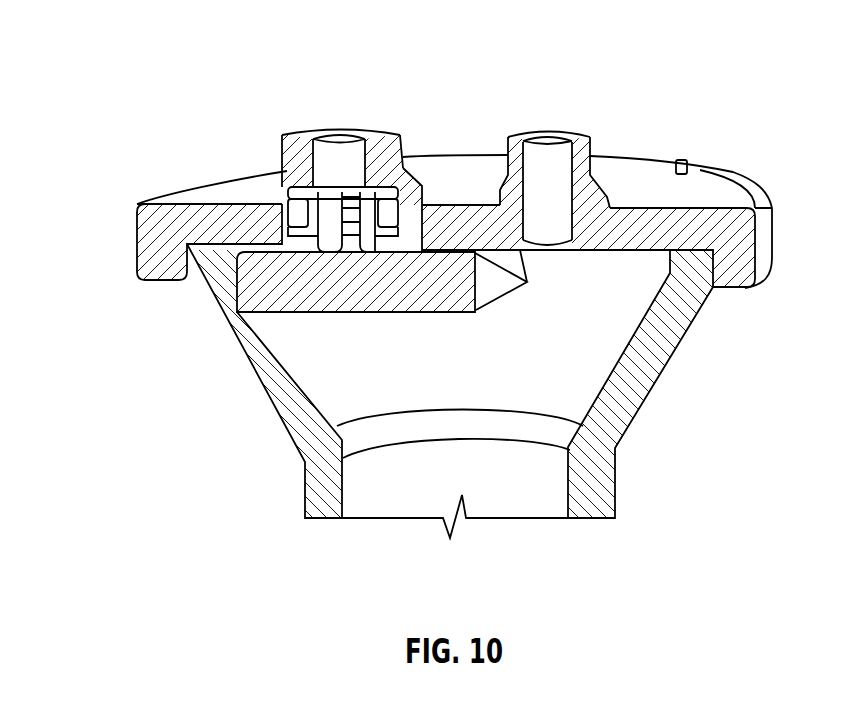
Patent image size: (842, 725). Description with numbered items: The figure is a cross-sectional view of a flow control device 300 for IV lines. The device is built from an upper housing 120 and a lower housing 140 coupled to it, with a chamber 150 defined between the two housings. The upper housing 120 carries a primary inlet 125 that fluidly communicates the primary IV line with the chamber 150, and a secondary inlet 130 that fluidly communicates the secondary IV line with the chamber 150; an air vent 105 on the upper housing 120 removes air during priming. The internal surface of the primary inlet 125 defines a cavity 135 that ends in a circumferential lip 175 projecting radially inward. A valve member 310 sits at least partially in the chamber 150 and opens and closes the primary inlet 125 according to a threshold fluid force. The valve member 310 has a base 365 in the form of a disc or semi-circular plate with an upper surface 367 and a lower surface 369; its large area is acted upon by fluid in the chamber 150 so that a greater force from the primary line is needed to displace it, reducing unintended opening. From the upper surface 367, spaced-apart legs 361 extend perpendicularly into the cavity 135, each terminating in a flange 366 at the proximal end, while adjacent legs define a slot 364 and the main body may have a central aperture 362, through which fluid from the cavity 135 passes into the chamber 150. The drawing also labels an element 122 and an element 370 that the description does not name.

The flow control device 300 is at (100, 34).
The upper housing 120 is at (135, 262).
The upper surface of flange 122 is at (297, 242).
The primary inlet 125 is at (294, 131).
The secondary inlet 130 is at (558, 128).
The cavity 135 is at (286, 212).
The circumferential lip 175 is at (296, 200).
The air vent 105 is at (683, 158).
The lower housing 140 is at (302, 452).
The chamber 150 is at (350, 397).
The valve member 310 is at (306, 316).
The legs 361 is at (283, 148).
The central aperture 362 is at (374, 185).
The slot 364 is at (402, 148).
The base 365 is at (250, 300).
The flange 366 is at (351, 197).
The upper surface 367 is at (523, 275).
The lower surface 369 is at (278, 342).
The groove 370 is at (200, 293).